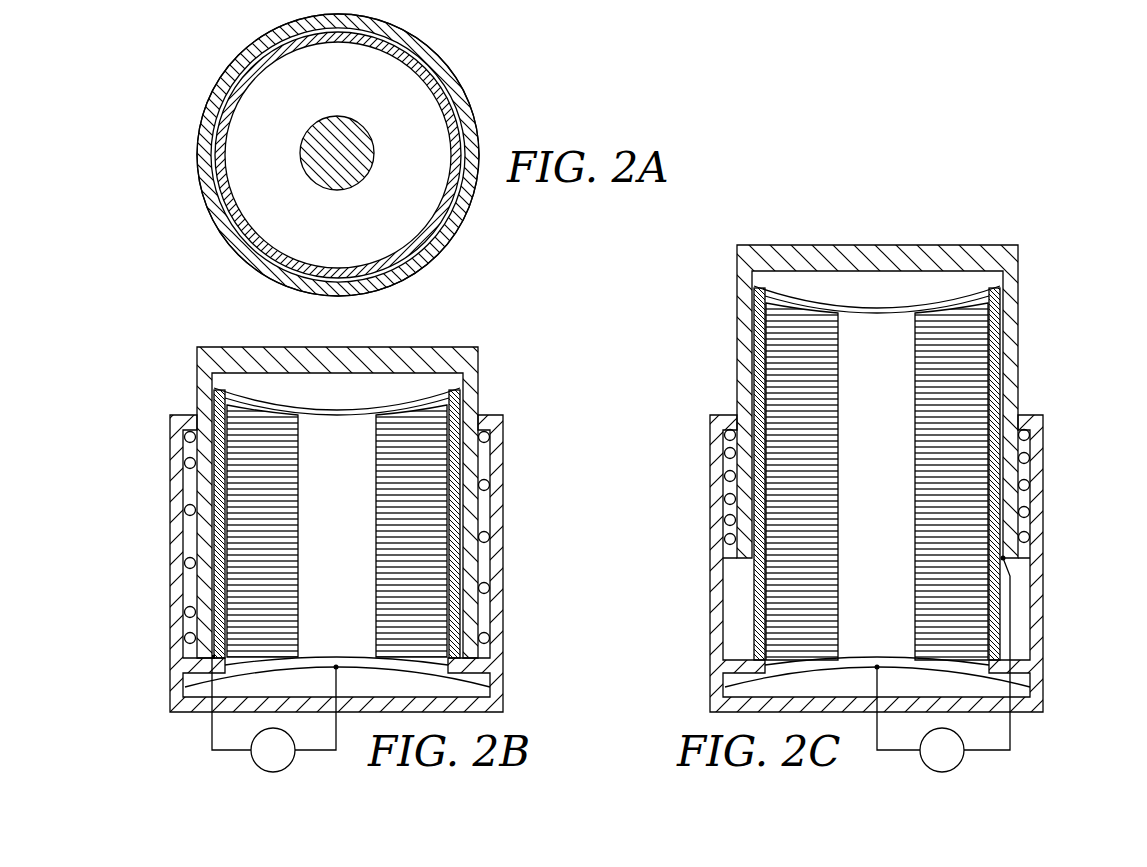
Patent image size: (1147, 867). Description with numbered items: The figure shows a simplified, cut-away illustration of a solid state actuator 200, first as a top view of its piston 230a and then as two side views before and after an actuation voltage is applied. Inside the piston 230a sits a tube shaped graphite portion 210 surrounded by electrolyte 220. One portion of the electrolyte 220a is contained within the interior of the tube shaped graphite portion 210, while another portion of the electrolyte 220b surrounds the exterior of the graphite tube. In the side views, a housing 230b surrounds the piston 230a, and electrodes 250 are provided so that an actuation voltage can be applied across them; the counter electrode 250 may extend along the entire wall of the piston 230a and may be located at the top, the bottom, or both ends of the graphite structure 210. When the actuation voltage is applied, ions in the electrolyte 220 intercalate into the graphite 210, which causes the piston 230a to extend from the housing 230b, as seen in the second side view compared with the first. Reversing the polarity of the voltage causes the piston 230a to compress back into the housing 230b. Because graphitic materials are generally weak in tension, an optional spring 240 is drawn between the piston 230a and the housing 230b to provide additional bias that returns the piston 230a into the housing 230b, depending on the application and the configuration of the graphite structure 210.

In FIG. 2A, the solid state actuator 200 is at (466, 60).
In FIG. 2B, the solid state actuator 200 is at (496, 367).
In FIG. 2C, the solid state actuator 200 is at (845, 195).
In FIG. 2A, the tube shaped graphite portion 210 is at (261, 124).
In FIG. 2B, the tube shaped graphite portion 210 is at (275, 425).
In FIG. 2C, the tube shaped graphite portion 210 is at (815, 323).
In FIG. 2A, the electrolyte 220 is at (450, 152).
In FIG. 2B, the electrolyte 220 is at (217, 390).
In FIG. 2C, the electrolyte 220 is at (757, 288).
In FIG. 2A, the portion of the electrolyte 220a is at (330, 118).
In FIG. 2A, the portion of the electrolyte 220b is at (330, 268).
In FIG. 2A, the piston 230a is at (467, 88).
In FIG. 2B, the piston 230a is at (205, 358).
In FIG. 2C, the piston 230a is at (738, 255).
In FIG. 2B, the housing 230b is at (178, 643).
In FIG. 2C, the housing 230b is at (716, 642).
In FIG. 2B, the spring 240 is at (186, 498).
In FIG. 2C, the spring 240 is at (727, 487).
In FIG. 2A, the electrodes 250 is at (207, 183).
In FIG. 2B, the electrodes 250 is at (214, 392).
In FIG. 2C, the electrodes 250 is at (754, 289).